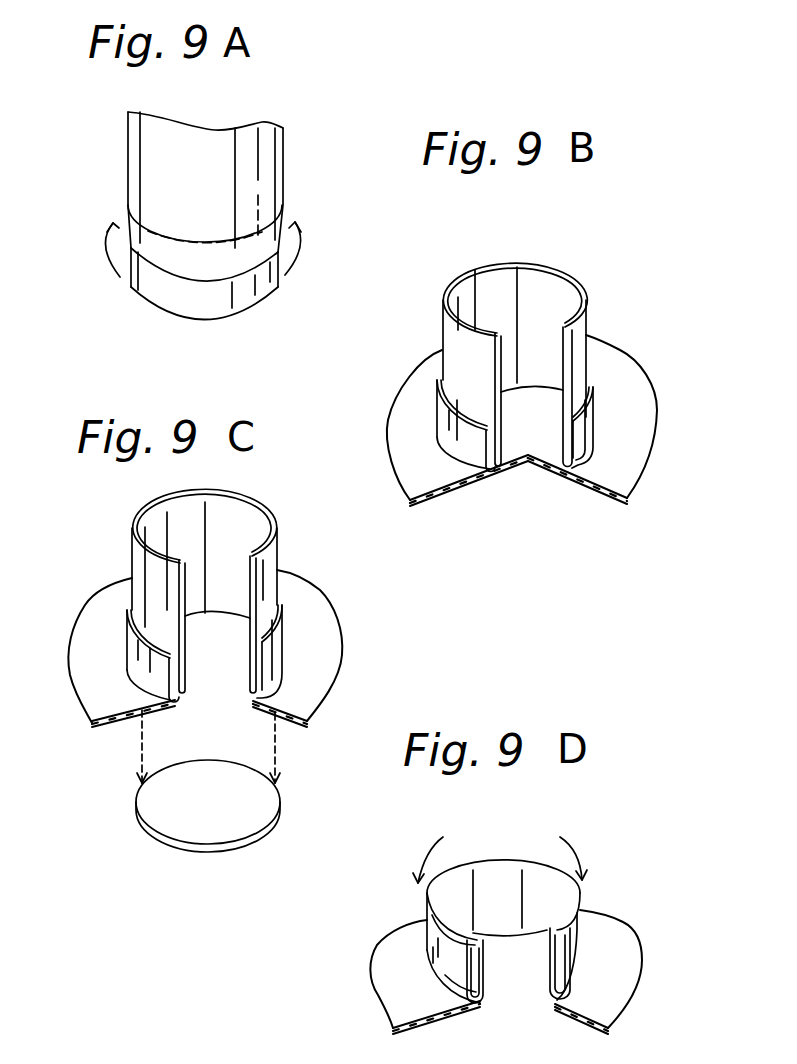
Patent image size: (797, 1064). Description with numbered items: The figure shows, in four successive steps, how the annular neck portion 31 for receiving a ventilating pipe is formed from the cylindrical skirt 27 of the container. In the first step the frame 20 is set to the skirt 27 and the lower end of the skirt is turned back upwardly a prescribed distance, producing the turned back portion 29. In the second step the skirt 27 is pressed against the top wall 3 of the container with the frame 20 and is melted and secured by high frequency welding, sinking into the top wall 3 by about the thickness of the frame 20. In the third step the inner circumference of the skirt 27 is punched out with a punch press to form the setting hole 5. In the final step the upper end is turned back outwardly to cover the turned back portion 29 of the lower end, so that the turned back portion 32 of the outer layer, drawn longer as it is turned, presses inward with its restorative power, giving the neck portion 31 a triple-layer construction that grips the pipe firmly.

In FIG. 9B, the top wall 3 is at (633, 453).
In FIG. 9C, the top wall 3 is at (325, 633).
In FIG. 9D, the top wall 3 is at (393, 987).
In FIG. 9C, the setting hole 5 is at (222, 658).
In FIG. 9D, the setting hole 5 is at (517, 962).
In FIG. 9A, the frame 20 is at (263, 183).
In FIG. 9A, the skirt 27 is at (238, 298).
In FIG. 9B, the skirt 27 is at (492, 282).
In FIG. 9C, the skirt 27 is at (265, 555).
In FIG. 9D, the skirt 27 is at (547, 987).
In FIG. 9B, the turned back portion of the lower end 29 is at (465, 448).
In FIG. 9C, the turned back portion of the lower end 29 is at (148, 672).
In FIG. 9D, the turned back portion of the lower end 29 is at (458, 985).
In FIG. 9D, the annular neck portion 31 is at (605, 882).
In FIG. 9D, the turned back portion of the outer layer 32 is at (440, 940).